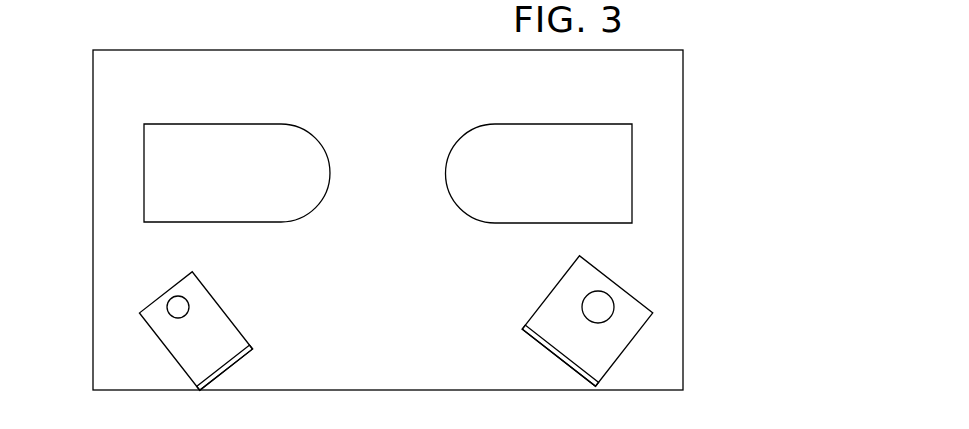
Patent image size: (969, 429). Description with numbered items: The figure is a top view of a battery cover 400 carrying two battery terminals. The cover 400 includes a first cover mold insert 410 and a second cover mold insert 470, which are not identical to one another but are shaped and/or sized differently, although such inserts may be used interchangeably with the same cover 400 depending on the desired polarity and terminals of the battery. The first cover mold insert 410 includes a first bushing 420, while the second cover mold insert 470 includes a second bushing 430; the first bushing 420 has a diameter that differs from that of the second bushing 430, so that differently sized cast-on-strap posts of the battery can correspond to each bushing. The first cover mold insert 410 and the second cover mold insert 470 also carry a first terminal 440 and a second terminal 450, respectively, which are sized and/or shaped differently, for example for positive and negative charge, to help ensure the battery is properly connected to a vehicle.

The cover 400 is at (685, 108).
The first cover mold insert 410 is at (158, 338).
The first bushing 420 is at (166, 296).
The second bushing 430 is at (614, 297).
The first terminal 440 is at (244, 362).
The second terminal 450 is at (560, 356).
The second cover mold insert 470 is at (623, 326).